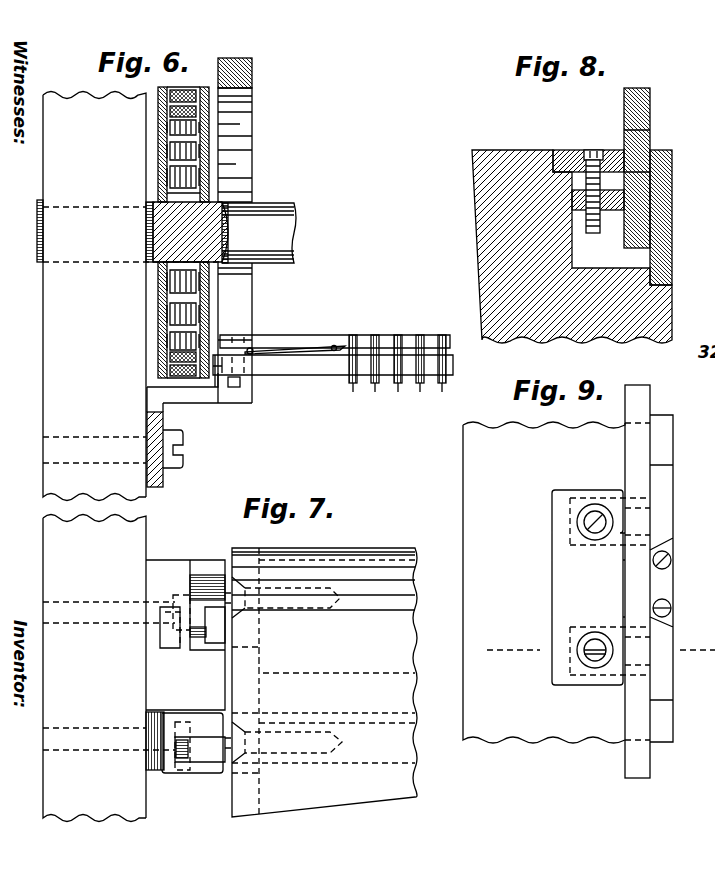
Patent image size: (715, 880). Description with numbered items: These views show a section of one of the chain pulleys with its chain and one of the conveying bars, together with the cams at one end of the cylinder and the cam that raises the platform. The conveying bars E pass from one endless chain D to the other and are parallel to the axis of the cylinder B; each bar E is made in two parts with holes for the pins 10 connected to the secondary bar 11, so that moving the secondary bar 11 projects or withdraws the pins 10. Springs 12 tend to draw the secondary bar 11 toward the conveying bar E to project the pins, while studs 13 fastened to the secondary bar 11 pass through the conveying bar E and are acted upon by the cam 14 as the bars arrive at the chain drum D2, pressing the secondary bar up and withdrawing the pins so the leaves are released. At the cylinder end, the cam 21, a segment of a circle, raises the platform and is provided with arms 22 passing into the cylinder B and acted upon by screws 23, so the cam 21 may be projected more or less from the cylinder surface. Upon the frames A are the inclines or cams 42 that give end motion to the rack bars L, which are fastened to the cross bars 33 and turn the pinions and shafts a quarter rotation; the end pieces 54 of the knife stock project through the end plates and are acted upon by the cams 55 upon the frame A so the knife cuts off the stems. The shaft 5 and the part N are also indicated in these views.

In FIG. 6, the shaft 5 is at (231, 232).
In FIG. 6, the pins 10 is at (397, 367).
In FIG. 6, the secondary bar 11 is at (335, 331).
In FIG. 6, the springs 12 is at (311, 355).
In FIG. 6, the studs 13 is at (236, 390).
In FIG. 6, the cam 14 is at (249, 230).
In FIG. 8, the cam 21 is at (650, 186).
In FIG. 9, the cam 21 is at (625, 458).
In FIG. 8, the arms 22 is at (588, 205).
In FIG. 8, the screws 23 is at (597, 148).
In FIG. 9, the screws 23 is at (597, 532).
In FIG. 7, the cross bars 33 is at (195, 768).
In FIG. 7, the inclined planes or cams 42 is at (155, 772).
In FIG. 7, the end pieces 54 is at (218, 625).
In FIG. 7, the cams 55 is at (190, 586).
In FIG. 6, the frames A is at (129, 296).
In FIG. 7, the frames A is at (109, 668).
In FIG. 7, the cylinder B is at (321, 682).
In FIG. 8, the cylinder B is at (572, 235).
In FIG. 9, the cylinder B is at (544, 582).
In FIG. 6, the endless chains D is at (192, 414).
In FIG. 6, the chain drum D2 is at (160, 120).
In FIG. 6, the conveying bars E is at (341, 371).
In FIG. 7, the rack bars L is at (170, 718).
In FIG. 7, the nut N is at (200, 749).